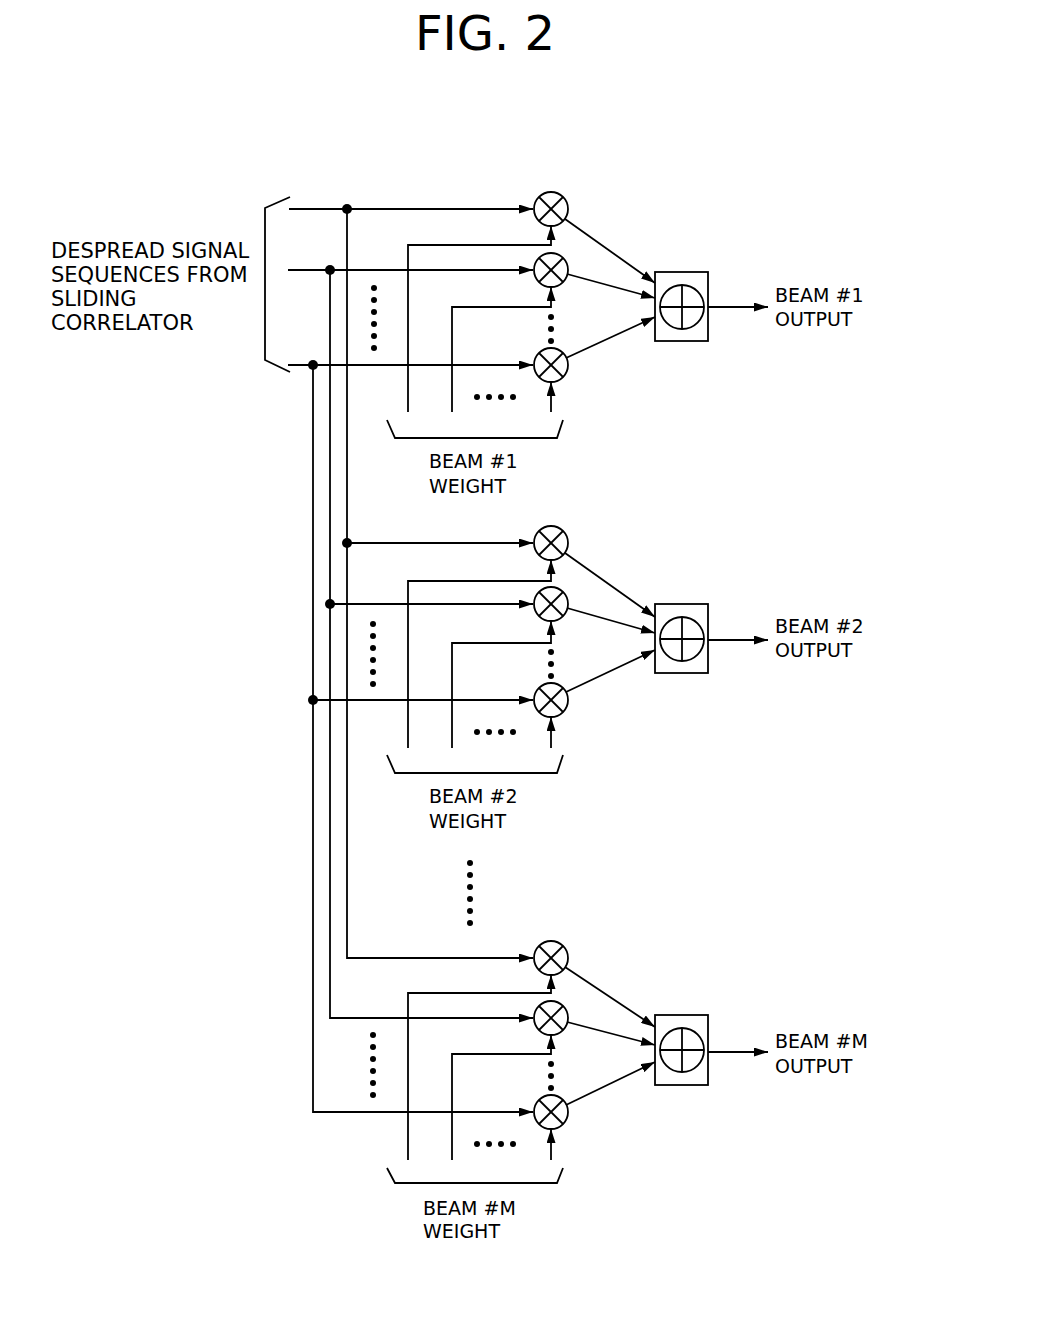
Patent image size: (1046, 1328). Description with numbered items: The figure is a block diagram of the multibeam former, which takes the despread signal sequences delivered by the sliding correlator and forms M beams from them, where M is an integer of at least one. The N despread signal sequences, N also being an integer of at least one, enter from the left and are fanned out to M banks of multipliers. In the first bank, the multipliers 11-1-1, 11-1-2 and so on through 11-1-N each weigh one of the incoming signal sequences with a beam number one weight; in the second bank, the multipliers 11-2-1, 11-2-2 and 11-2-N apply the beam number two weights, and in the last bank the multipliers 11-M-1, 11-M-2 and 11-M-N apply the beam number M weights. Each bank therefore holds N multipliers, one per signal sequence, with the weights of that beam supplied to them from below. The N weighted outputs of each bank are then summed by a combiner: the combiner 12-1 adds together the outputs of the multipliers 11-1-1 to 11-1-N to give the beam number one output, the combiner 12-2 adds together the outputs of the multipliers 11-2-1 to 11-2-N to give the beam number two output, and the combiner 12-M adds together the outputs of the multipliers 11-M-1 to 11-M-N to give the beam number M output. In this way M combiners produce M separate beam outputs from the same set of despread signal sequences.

The multiplier 11-1-1 is at (563, 197).
The multiplier 11-1-2 is at (567, 258).
The multiplier 11-1-N is at (563, 377).
The combiner 12-1 is at (708, 285).
The multiplier 11-2-1 is at (563, 531).
The multiplier 11-2-2 is at (567, 592).
The multiplier 11-2-N is at (563, 712).
The combiner 12-2 is at (708, 617).
The multiplier 11-M-1 is at (563, 946).
The multiplier 11-M-2 is at (567, 1006).
The multiplier 11-M-N is at (563, 1124).
The combiner 12-M is at (708, 1028).